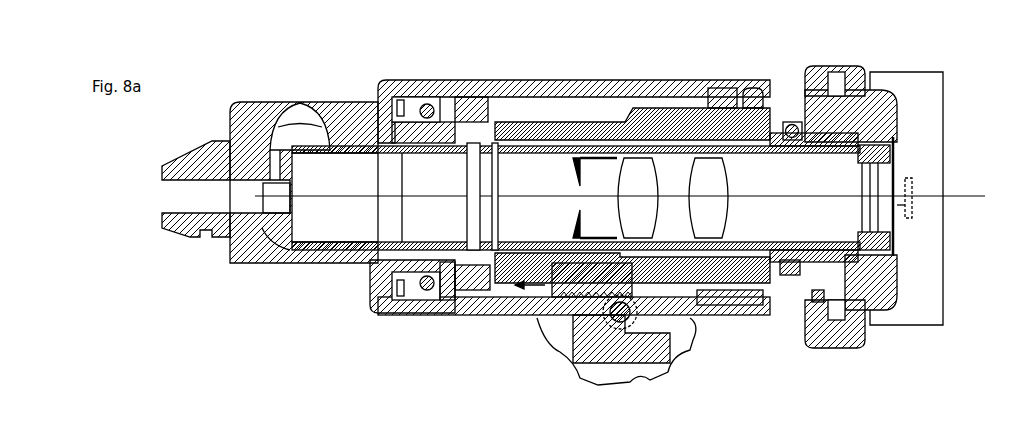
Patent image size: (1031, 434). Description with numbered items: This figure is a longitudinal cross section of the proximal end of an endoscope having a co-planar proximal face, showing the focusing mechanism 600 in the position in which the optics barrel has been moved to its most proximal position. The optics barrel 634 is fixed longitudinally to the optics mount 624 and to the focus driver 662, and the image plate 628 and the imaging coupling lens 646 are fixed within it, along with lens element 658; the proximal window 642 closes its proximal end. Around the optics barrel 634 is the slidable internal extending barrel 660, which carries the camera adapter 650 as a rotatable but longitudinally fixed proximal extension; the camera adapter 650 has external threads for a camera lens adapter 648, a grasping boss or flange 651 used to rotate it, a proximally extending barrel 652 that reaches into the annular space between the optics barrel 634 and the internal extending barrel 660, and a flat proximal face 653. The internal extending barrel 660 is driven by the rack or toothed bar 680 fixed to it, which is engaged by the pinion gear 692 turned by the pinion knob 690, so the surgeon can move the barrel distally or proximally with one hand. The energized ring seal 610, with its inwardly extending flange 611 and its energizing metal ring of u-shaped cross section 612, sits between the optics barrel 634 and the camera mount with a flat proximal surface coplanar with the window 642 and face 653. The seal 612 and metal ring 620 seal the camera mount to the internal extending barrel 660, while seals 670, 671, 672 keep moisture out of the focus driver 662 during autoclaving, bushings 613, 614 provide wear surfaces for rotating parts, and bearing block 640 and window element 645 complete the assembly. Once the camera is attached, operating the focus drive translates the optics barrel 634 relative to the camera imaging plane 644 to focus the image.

The focusing mechanism 600 is at (300, 300).
The seal 610 is at (893, 150).
The inwardly extending flange 611 is at (885, 300).
The metal ring of u-shaped radial cross section 612 is at (895, 138).
The bushing 613 is at (822, 336).
The bushing 614 is at (456, 313).
The metal ring 620 is at (812, 318).
The optics mount 624 is at (262, 228).
The image plate 628 is at (573, 178).
The optics barrel 634 is at (686, 140).
The bearing housing 640 is at (489, 312).
The proximal window 642 is at (890, 220).
The imaging plane 644 is at (912, 180).
The window 645 is at (907, 204).
The imaging coupling lens 646 is at (727, 210).
The camera lens adapter 648 is at (943, 292).
The camera adapter 650 is at (878, 90).
The grasping boss or flange 651 is at (866, 66).
The proximally extending barrel 652 is at (807, 146).
The flat proximal face 653 is at (897, 125).
The first lens 658 is at (654, 216).
The internal extending barrel 660 is at (646, 97).
The focus driver 662 is at (505, 313).
The seal 670 is at (735, 98).
The seal 671 is at (425, 291).
The seal 672 is at (390, 300).
The rack or toothed bar 680 is at (540, 312).
The pinion knob 690 is at (590, 385).
The pinion gear 692 is at (613, 330).